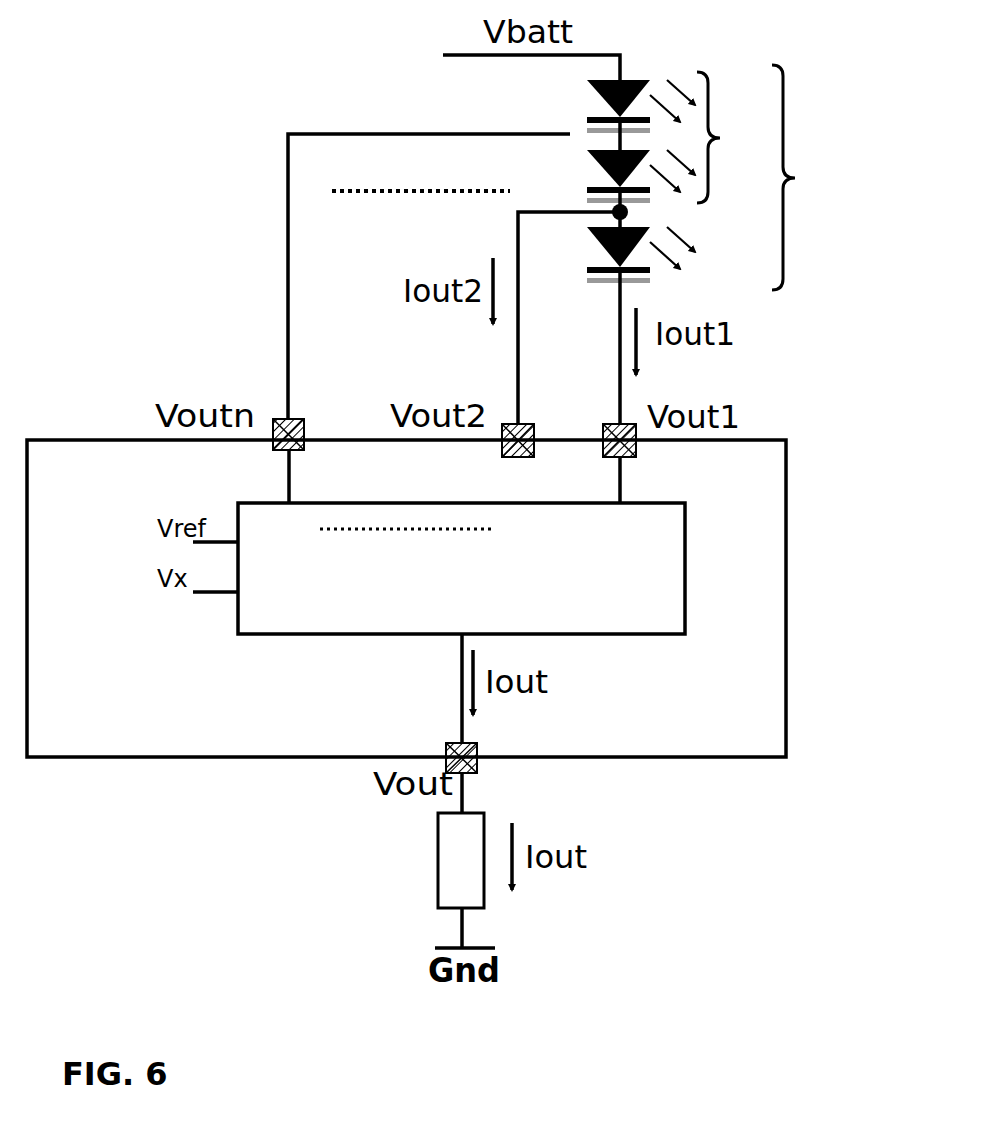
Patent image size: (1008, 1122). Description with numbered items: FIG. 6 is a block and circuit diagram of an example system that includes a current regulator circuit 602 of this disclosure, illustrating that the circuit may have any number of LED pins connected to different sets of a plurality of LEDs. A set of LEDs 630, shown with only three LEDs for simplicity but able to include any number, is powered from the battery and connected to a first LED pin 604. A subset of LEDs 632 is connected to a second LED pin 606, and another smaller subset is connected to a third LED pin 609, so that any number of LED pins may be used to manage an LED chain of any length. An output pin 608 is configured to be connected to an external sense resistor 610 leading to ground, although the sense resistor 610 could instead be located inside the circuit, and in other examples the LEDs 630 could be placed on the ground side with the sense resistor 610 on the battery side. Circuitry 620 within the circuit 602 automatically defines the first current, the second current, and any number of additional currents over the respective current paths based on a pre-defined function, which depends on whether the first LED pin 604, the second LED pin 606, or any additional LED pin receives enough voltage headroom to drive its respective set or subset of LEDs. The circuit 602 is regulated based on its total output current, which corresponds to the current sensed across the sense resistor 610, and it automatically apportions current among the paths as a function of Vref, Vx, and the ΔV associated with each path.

The circuit 602 is at (765, 445).
The first LED pin 604 is at (615, 423).
The second LED pin 606 is at (525, 423).
The output pin 608 is at (478, 765).
The third LED pin 609 is at (293, 420).
The sense resistor 610 is at (438, 848).
The circuitry 620 is at (685, 545).
The set of LEDs 630 is at (725, 244).
The subset of LEDs 632 is at (678, 149).